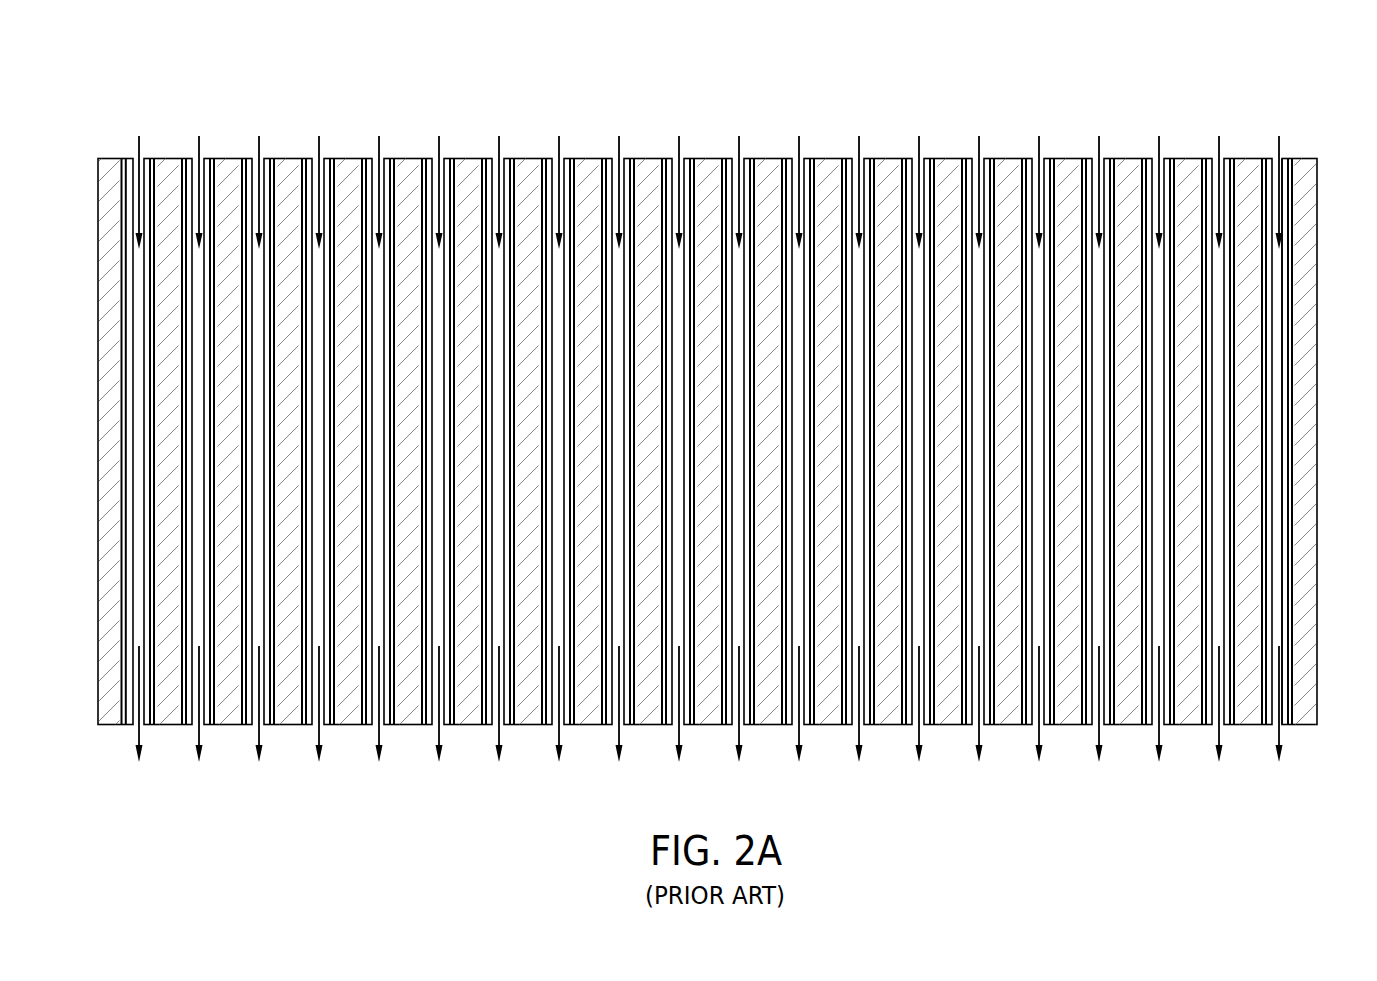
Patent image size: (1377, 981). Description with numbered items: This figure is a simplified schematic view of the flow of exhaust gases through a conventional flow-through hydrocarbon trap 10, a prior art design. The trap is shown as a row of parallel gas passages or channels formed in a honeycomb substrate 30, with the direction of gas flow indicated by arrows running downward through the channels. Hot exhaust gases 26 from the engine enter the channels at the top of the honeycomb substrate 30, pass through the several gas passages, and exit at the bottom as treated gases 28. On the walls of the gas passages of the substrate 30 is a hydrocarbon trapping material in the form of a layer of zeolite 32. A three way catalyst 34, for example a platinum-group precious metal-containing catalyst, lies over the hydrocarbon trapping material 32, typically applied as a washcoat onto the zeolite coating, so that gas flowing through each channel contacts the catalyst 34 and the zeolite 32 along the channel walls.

The prior art fuel cell stack 10 is at (643, 115).
The hot exhaust gases 26 is at (1282, 207).
The treated gases 28 is at (1277, 657).
The honeycomb substrate 30 is at (1300, 580).
The layer of zeolite 32 is at (1291, 700).
The three way catalyst 34 is at (1287, 670).